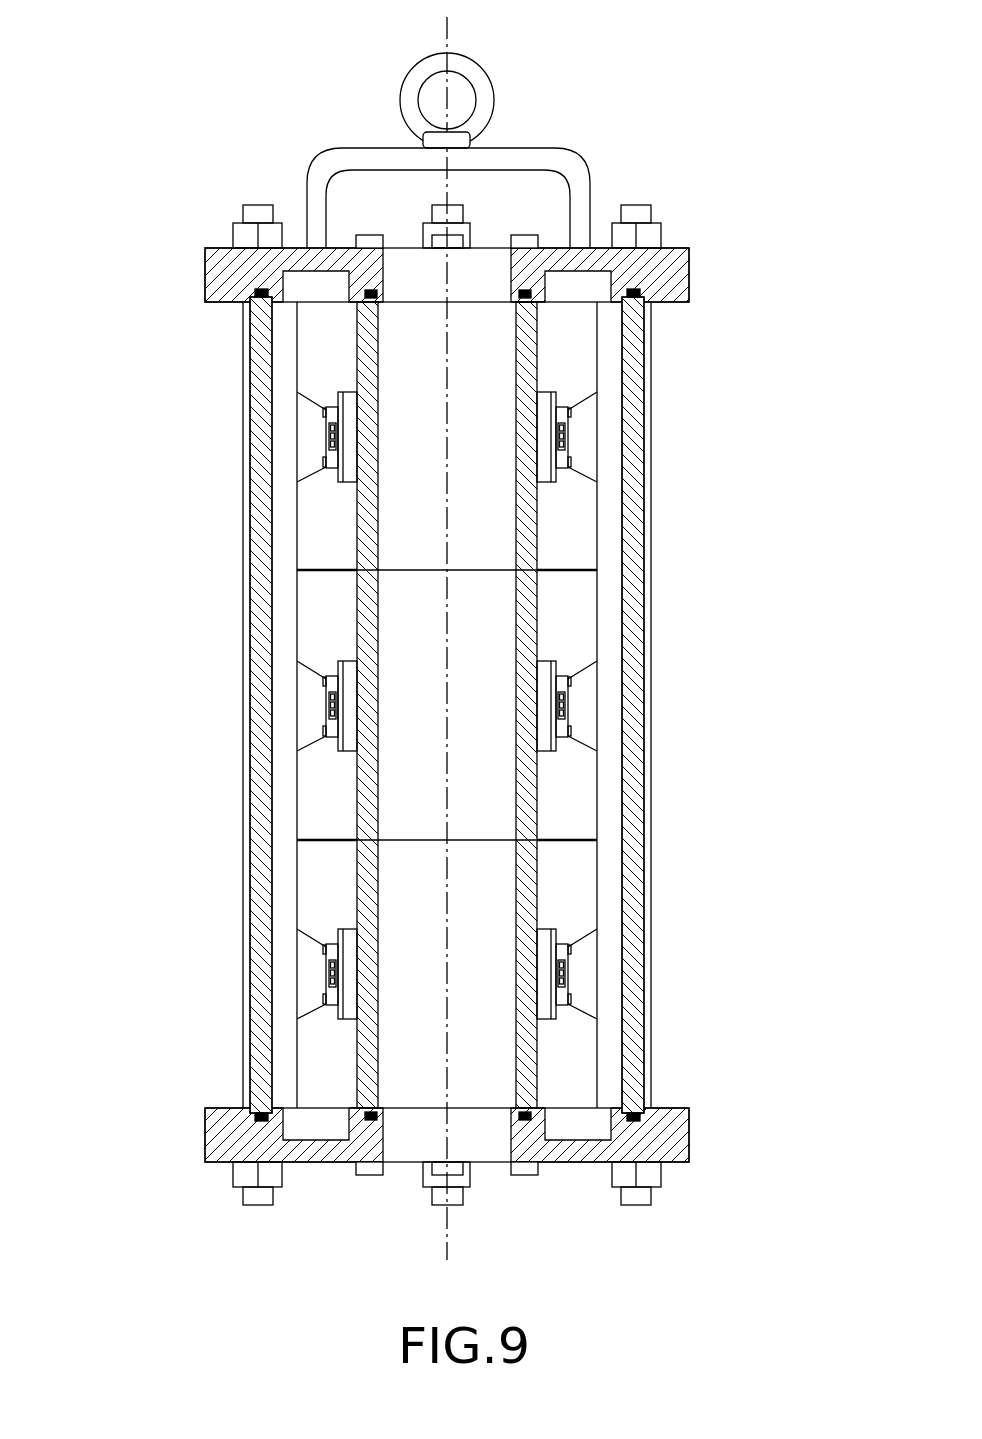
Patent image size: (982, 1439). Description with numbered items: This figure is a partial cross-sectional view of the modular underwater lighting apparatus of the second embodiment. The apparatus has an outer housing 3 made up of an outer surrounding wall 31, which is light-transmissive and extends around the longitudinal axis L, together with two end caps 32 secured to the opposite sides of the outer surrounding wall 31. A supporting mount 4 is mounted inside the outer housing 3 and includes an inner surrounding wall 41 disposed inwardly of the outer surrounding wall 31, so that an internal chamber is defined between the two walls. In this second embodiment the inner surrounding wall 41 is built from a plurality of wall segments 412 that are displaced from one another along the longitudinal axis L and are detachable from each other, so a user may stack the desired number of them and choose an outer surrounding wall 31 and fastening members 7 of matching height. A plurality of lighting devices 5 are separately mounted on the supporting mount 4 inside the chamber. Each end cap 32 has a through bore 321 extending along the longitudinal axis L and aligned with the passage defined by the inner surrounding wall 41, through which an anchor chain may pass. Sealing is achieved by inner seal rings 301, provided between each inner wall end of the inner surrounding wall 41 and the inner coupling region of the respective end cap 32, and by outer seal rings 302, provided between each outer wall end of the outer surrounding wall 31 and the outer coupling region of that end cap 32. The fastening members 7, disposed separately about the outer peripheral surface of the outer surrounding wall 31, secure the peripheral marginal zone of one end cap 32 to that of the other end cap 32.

The longitudinal axis L is at (447, 38).
The outer housing 3 is at (437, 676).
The supporting mount 4 is at (464, 611).
The lighting device 5 is at (613, 703).
The fastening member 7 is at (243, 738).
The outer surrounding wall 31 is at (633, 473).
The end cap 32 is at (475, 676).
The inner surrounding wall 41 is at (352, 368).
The inner seal ring 301 is at (523, 292).
The outer seal ring 302 is at (634, 286).
The through bore 321 is at (385, 297).
The wall segment 412 is at (535, 345).